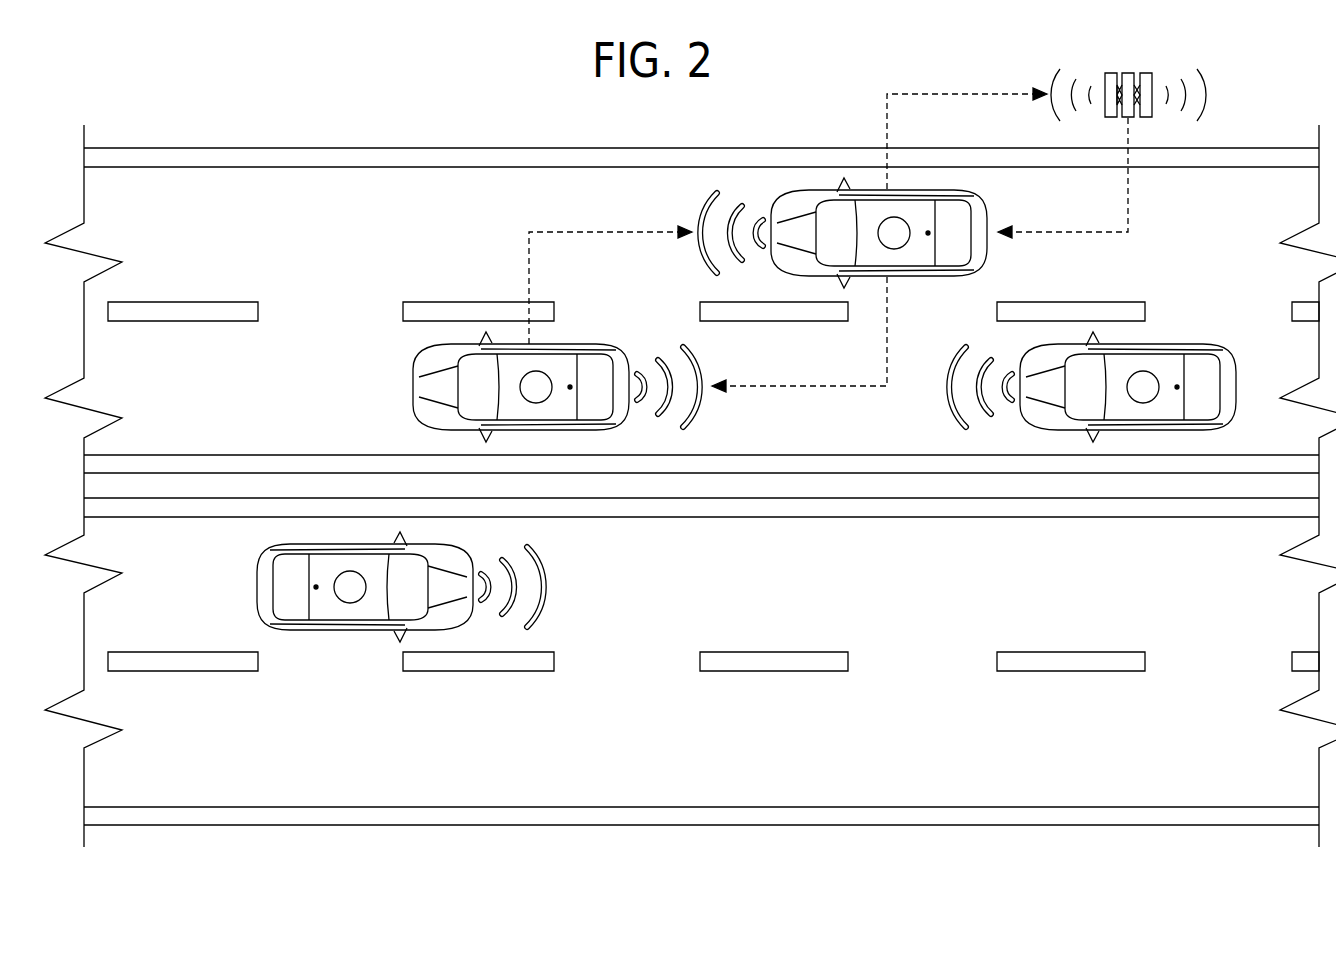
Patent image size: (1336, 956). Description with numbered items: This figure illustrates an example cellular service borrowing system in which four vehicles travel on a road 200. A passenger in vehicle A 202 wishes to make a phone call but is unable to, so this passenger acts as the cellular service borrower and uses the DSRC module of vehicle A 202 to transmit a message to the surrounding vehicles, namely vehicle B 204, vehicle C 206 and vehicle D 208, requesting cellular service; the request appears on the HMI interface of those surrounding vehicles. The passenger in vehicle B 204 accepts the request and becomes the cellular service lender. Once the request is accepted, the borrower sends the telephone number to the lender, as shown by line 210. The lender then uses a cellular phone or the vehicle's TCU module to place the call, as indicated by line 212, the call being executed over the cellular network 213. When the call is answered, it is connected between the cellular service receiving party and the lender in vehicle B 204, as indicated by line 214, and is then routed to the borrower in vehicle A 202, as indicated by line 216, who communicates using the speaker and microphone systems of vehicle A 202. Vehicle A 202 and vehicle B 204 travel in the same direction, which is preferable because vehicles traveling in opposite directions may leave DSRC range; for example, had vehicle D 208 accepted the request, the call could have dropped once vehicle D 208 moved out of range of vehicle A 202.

The road 200 is at (277, 116).
The vehicle A 202 is at (410, 387).
The vehicle B 204 is at (925, 278).
The vehicle C 206 is at (1198, 343).
The vehicle D 208 is at (256, 590).
The line 210 is at (610, 232).
The line 212 is at (967, 94).
The cellular network 213 is at (1128, 73).
The line 214 is at (1130, 195).
The line 216 is at (807, 388).